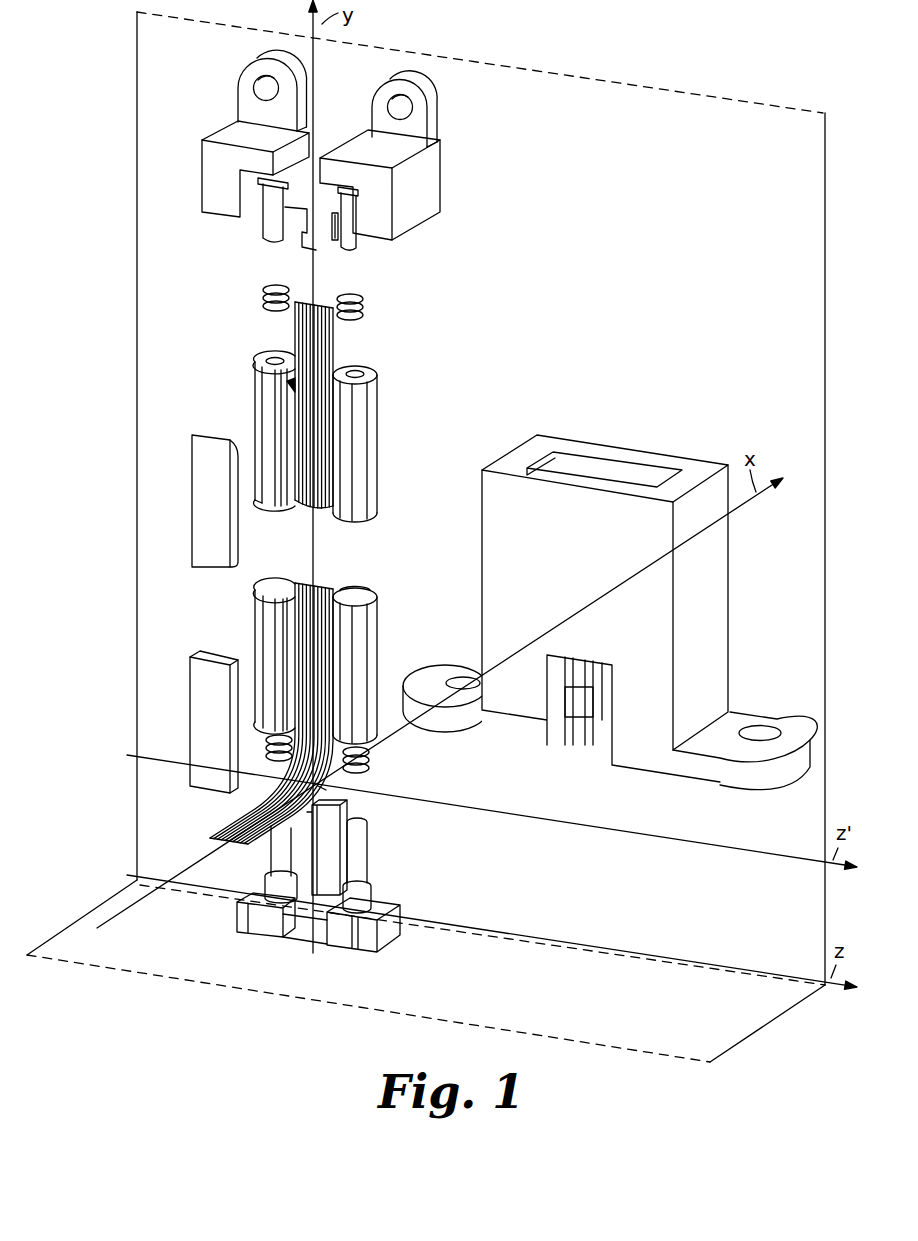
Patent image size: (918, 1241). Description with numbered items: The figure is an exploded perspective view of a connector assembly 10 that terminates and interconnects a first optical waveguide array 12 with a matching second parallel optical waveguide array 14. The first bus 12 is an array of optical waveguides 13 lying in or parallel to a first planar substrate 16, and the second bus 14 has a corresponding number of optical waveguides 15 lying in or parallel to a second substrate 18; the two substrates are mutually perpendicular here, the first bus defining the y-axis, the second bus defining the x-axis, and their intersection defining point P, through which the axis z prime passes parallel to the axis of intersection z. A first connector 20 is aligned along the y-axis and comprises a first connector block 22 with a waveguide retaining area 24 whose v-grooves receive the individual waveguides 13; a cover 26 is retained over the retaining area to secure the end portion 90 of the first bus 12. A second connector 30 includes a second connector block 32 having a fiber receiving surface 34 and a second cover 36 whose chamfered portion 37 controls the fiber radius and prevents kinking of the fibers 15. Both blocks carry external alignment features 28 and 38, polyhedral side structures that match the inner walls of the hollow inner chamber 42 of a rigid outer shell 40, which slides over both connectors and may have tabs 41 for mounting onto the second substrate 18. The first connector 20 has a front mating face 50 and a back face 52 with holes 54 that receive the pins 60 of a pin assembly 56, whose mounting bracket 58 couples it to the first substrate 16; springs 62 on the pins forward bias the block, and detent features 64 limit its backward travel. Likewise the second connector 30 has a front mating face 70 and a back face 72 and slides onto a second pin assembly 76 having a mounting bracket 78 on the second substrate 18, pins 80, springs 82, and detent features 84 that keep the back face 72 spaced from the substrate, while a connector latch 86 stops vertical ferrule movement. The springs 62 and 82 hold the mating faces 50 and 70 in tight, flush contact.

The connector assembly 10 is at (426, 537).
The first optical waveguide array 12 is at (291, 379).
The optical waveguides 13 is at (296, 336).
The second parallel optical waveguide array 14 is at (268, 733).
The optical waveguides 15 is at (239, 847).
The first planar substrate 16 is at (607, 172).
The second substrate 18 is at (599, 1021).
The first connector 20 is at (338, 437).
The first connector block 22 is at (331, 437).
The waveguide retaining area 24 is at (256, 437).
The cover 26 is at (198, 483).
The external alignment features 28 is at (373, 440).
The second connector 30 is at (330, 643).
The second connector block 32 is at (274, 656).
The fiber receiving surface 34 is at (302, 617).
The second cover 36 is at (192, 722).
The chamfered portion 37 is at (240, 760).
The external alignment features 38 is at (376, 643).
The outer shell 40 is at (610, 595).
The tabs 41 is at (745, 722).
The hollow inner chamber 42 is at (605, 465).
The front mating face 50 is at (266, 506).
The back face 52 is at (262, 361).
The holes 54 is at (368, 369).
The pin assembly 56 is at (344, 168).
The mounting bracket 58 is at (400, 150).
The pins 60 is at (355, 248).
The springs 62 is at (365, 307).
The detent features 64 is at (350, 196).
The front mating face 70 is at (369, 576).
The back face 72 is at (378, 740).
The second pin assembly 76 is at (314, 892).
The mounting bracket 78 is at (268, 930).
The pins 80 is at (365, 851).
The springs 82 is at (368, 770).
The detent features 84 is at (372, 896).
The connector latch 86 is at (330, 860).
The end portion 90 is at (288, 384).
The intersection point P is at (330, 790).